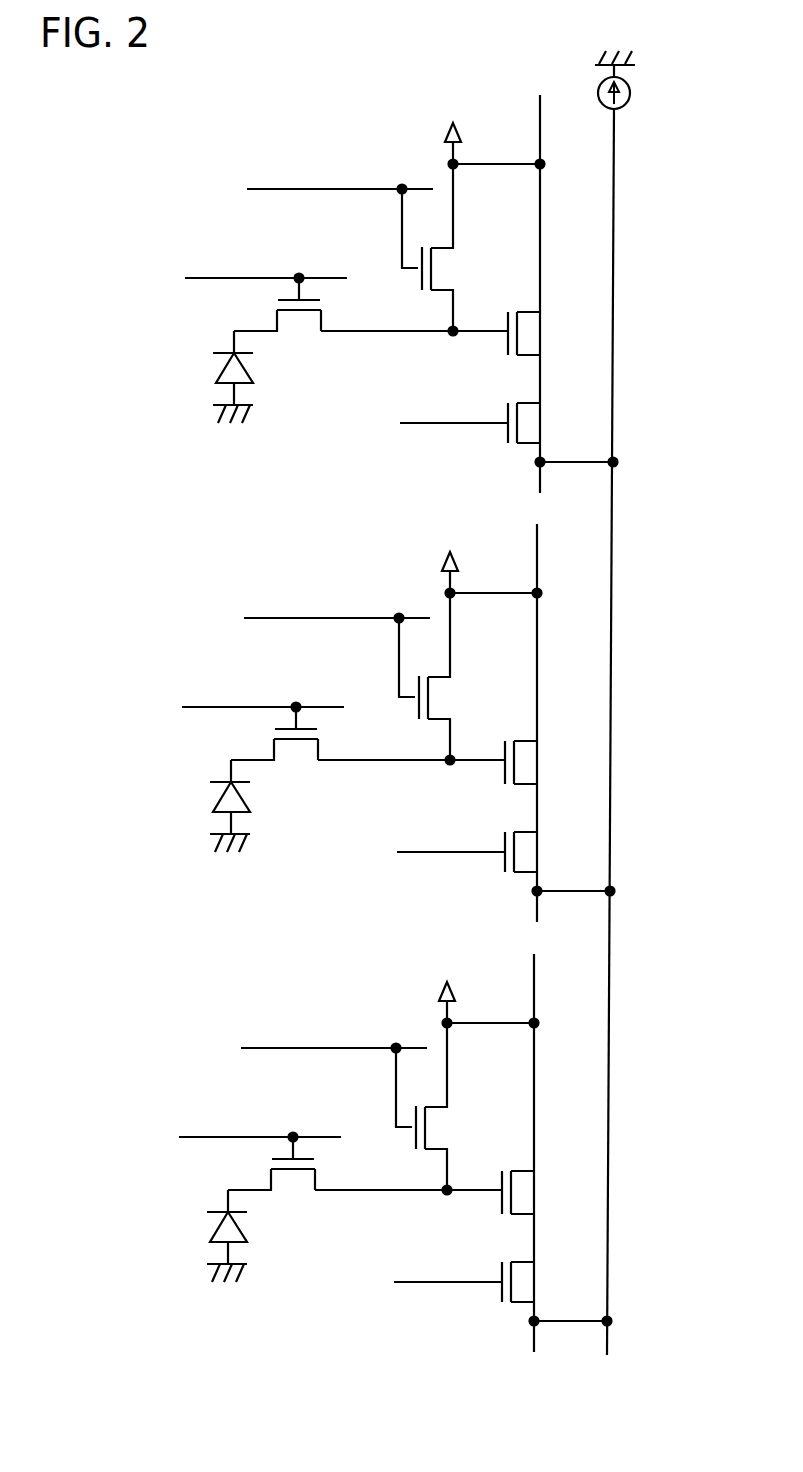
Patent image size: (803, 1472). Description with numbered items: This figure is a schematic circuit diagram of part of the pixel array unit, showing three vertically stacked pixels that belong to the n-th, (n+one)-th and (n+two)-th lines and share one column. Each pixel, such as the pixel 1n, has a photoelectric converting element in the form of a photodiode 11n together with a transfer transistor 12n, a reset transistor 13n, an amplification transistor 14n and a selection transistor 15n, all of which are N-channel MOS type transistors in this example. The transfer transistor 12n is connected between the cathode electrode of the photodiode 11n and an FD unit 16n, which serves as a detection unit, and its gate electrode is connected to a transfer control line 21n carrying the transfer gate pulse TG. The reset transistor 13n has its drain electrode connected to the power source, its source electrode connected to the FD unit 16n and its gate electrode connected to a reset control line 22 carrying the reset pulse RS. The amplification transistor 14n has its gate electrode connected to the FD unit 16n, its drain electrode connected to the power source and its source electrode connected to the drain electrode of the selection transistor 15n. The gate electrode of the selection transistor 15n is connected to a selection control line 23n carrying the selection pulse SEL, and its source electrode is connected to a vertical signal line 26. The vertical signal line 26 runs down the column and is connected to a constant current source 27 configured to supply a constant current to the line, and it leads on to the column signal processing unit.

The pixel 1n is at (172, 122).
The photoelectric converting element 11n is at (218, 366).
The transfer transistor 12n is at (298, 317).
The reset transistor 13n is at (440, 271).
The amplification transistor 14n is at (532, 336).
The selection transistor 15n is at (532, 426).
The FD unit 16n is at (453, 340).
The transfer control line 21n is at (230, 275).
The reset control line 22 is at (284, 187).
The selection control line 23n is at (449, 427).
The vertical signal line 26 is at (613, 267).
The constant current source 27 is at (630, 93).